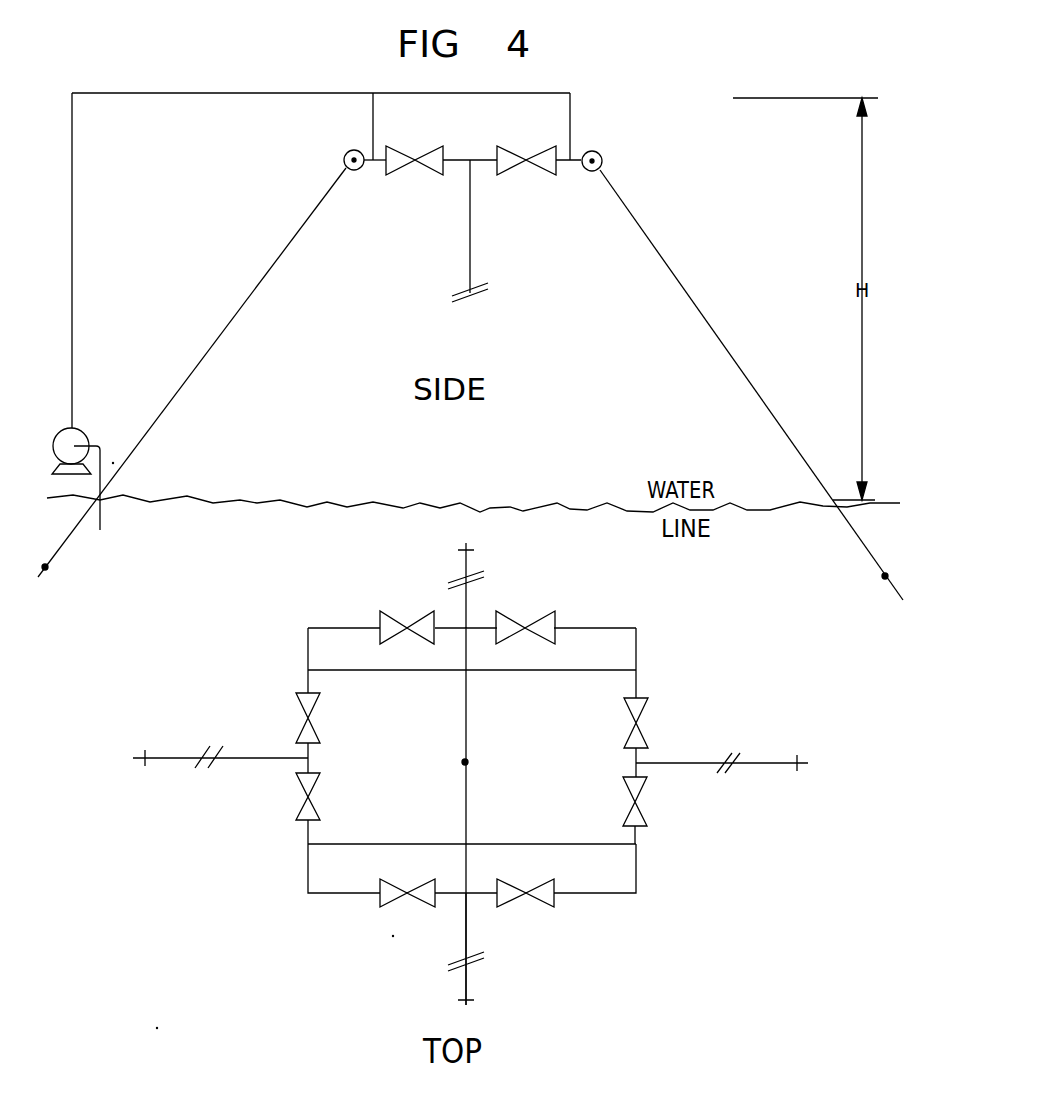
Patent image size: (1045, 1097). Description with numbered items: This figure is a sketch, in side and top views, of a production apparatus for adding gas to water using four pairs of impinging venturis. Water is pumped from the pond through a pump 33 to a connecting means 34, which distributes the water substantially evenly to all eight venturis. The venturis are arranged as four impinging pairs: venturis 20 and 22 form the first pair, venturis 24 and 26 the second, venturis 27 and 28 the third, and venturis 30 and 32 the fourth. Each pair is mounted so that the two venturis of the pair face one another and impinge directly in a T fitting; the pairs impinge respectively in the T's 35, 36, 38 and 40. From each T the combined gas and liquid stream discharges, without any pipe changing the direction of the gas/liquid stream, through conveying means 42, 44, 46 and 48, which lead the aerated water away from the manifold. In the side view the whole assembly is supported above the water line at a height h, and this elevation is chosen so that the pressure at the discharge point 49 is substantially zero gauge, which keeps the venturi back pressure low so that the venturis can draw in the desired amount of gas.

The venturi 20 is at (410, 167).
The venturi 22 is at (527, 172).
The venturi 24 is at (600, 155).
The venturi 26 is at (640, 722).
The venturi 27 is at (527, 615).
The venturi 28 is at (411, 615).
The venturi 30 is at (343, 160).
The venturi 32 is at (300, 795).
The pump 33 is at (80, 430).
The connecting means 34 is at (373, 93).
The T 35 is at (466, 893).
The T 36 is at (637, 767).
The T 38 is at (468, 632).
The T 40 is at (315, 758).
The conveying means 42 is at (470, 238).
The conveying means 44 is at (672, 272).
The conveying means 46 is at (470, 565).
The conveying means 48 is at (222, 330).
The discharge point 49 is at (472, 158).